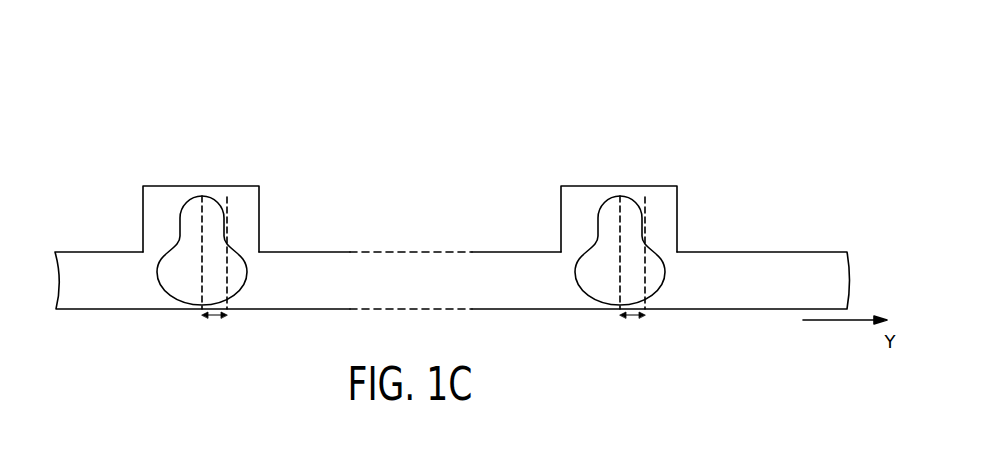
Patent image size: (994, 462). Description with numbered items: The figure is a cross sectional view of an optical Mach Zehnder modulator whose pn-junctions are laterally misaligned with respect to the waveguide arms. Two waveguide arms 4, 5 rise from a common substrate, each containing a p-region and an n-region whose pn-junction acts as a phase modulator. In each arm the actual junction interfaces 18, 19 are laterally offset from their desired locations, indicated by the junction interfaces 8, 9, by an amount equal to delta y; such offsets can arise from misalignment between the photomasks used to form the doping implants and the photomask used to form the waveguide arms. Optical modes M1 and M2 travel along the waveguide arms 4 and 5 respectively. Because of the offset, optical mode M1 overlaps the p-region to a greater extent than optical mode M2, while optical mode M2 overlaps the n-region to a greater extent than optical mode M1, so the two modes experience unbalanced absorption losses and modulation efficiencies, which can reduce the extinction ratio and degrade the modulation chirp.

The waveguide arm 4 is at (262, 155).
The waveguide arm 5 is at (665, 155).
The junction interface 8 is at (195, 287).
The junction interface 9 is at (615, 287).
The junction interface 18 is at (225, 202).
The junction interface 19 is at (643, 200).
The optical mode M1 is at (163, 263).
The optical mode M2 is at (663, 273).